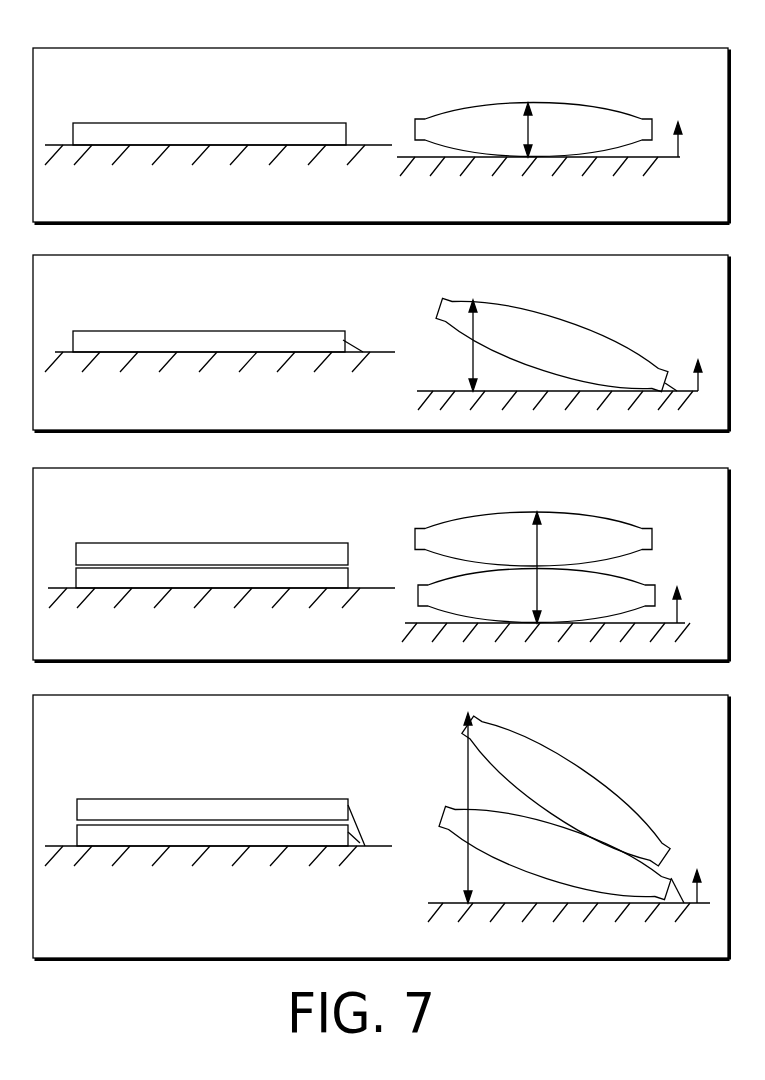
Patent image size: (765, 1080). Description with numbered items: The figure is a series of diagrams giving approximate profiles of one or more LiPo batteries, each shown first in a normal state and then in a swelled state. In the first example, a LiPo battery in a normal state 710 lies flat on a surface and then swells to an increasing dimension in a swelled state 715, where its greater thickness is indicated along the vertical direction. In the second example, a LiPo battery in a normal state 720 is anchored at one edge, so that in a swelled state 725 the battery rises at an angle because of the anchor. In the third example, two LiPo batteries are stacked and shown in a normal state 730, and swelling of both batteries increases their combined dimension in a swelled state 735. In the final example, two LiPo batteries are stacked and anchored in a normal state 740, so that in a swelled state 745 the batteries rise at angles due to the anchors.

The normal state 710 is at (92, 88).
The swelled state 715 is at (711, 80).
The normal state 720 is at (84, 290).
The swelled state 725 is at (703, 283).
The normal state 730 is at (84, 500).
The swelled state 735 is at (703, 493).
The normal state 740 is at (84, 734).
The swelled state 745 is at (703, 726).